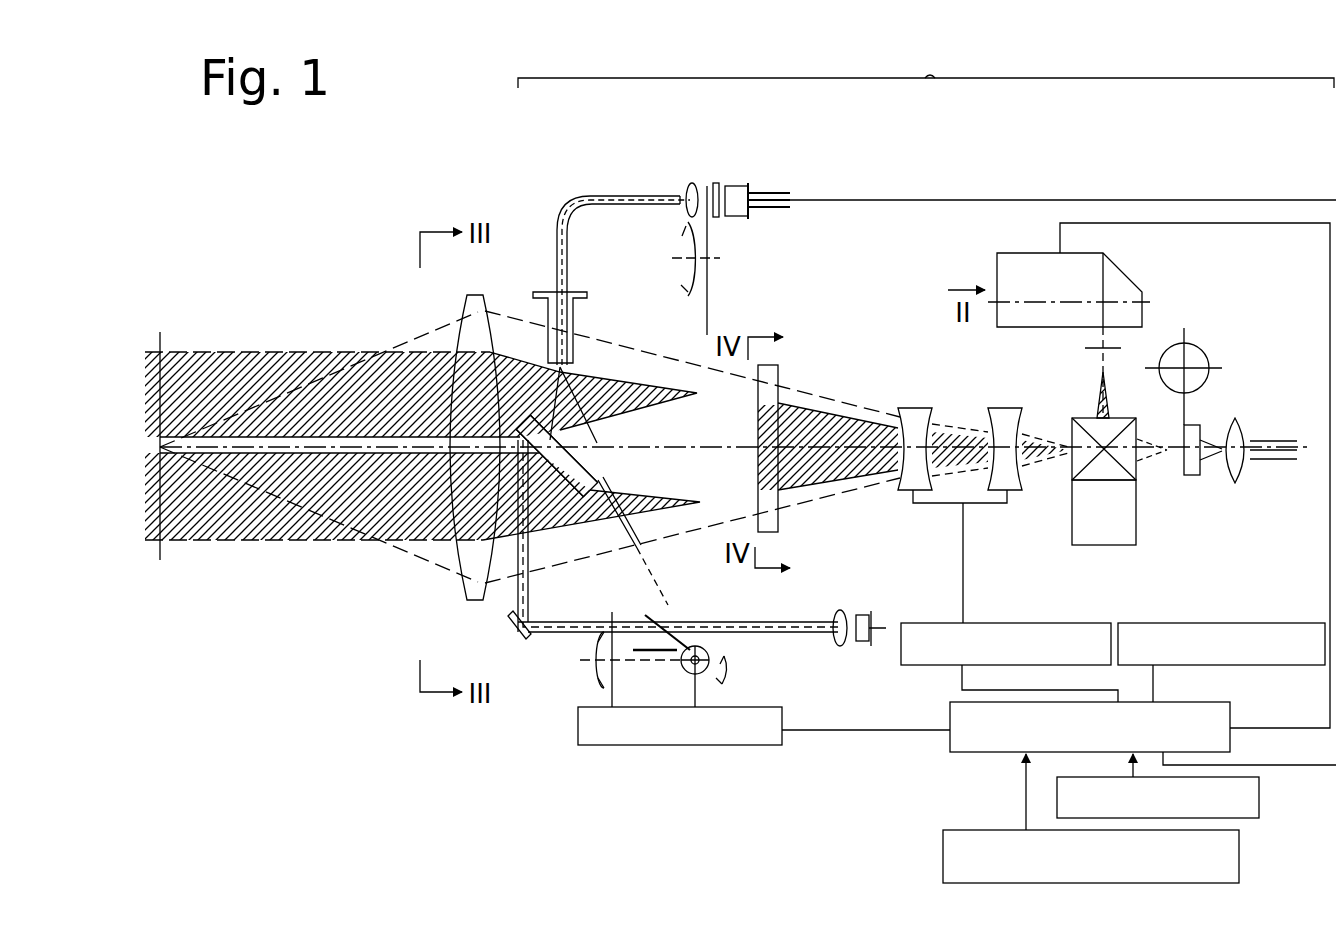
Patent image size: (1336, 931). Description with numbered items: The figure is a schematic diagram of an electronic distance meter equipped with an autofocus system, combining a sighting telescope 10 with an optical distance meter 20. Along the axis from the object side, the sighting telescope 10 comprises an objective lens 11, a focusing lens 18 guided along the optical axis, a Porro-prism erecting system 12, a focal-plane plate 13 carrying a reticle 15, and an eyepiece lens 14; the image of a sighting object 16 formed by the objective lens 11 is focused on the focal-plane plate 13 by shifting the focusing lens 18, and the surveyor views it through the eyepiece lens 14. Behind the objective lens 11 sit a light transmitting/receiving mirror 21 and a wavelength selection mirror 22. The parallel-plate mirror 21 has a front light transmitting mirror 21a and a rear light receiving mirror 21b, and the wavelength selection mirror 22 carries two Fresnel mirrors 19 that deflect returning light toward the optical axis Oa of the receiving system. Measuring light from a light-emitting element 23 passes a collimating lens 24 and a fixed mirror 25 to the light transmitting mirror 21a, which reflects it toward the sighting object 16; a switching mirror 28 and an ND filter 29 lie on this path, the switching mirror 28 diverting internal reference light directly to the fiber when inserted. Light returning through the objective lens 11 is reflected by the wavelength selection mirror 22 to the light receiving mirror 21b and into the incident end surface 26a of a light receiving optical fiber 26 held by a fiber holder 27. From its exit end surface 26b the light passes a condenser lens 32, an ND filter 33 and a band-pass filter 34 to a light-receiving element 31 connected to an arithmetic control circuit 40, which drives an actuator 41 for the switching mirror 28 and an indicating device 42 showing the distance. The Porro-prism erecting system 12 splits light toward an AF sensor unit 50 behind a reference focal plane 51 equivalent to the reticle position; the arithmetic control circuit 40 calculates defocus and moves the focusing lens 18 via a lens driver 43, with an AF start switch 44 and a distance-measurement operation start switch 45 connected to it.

The sighting telescope 10 is at (926, 65).
The objective lens 11 is at (497, 300).
The Porro-prism erecting system 12 is at (1068, 416).
The focal-plane plate 13 is at (1200, 424).
The eyepiece lens 14 is at (1236, 417).
The reticle 15 is at (1173, 378).
The sighting object 16 is at (162, 376).
The focusing lens 18 is at (915, 406).
The Fresnel mirrors 19 is at (760, 410).
The optical distance meter 20 is at (557, 204).
The light transmitting/receiving mirror 21 is at (570, 500).
The light transmitting mirror 21a is at (540, 472).
The light receiving mirror 21b is at (595, 460).
The wavelength selection mirror 22 is at (770, 364).
The light-emitting element 23 is at (866, 645).
The collimating lens 24 is at (841, 610).
The fixed mirror 25 is at (512, 624).
The light receiving optical fiber 26 is at (598, 195).
The incident end surface 26a is at (570, 372).
The exit end surface 26b is at (680, 198).
The fiber holder 27 is at (585, 300).
The switching mirror 28 is at (683, 628).
The ND filter 29 is at (612, 684).
The light-receiving element 31 is at (740, 218).
The condenser lens 32 is at (693, 185).
The ND filter 33 is at (710, 318).
The band-pass filter 34 is at (718, 183).
The arithmetic control circuit 40 is at (950, 716).
The actuator 41 is at (740, 745).
The indicating device 42 is at (1234, 622).
The lens driver 43 is at (1018, 622).
The AF start switch 44 is at (1259, 805).
The distance-measurement operation start switch 45 is at (970, 829).
The AF sensor unit 50 is at (1033, 251).
The reference focal plane 51 is at (1100, 350).
The optical axis Oa is at (677, 440).